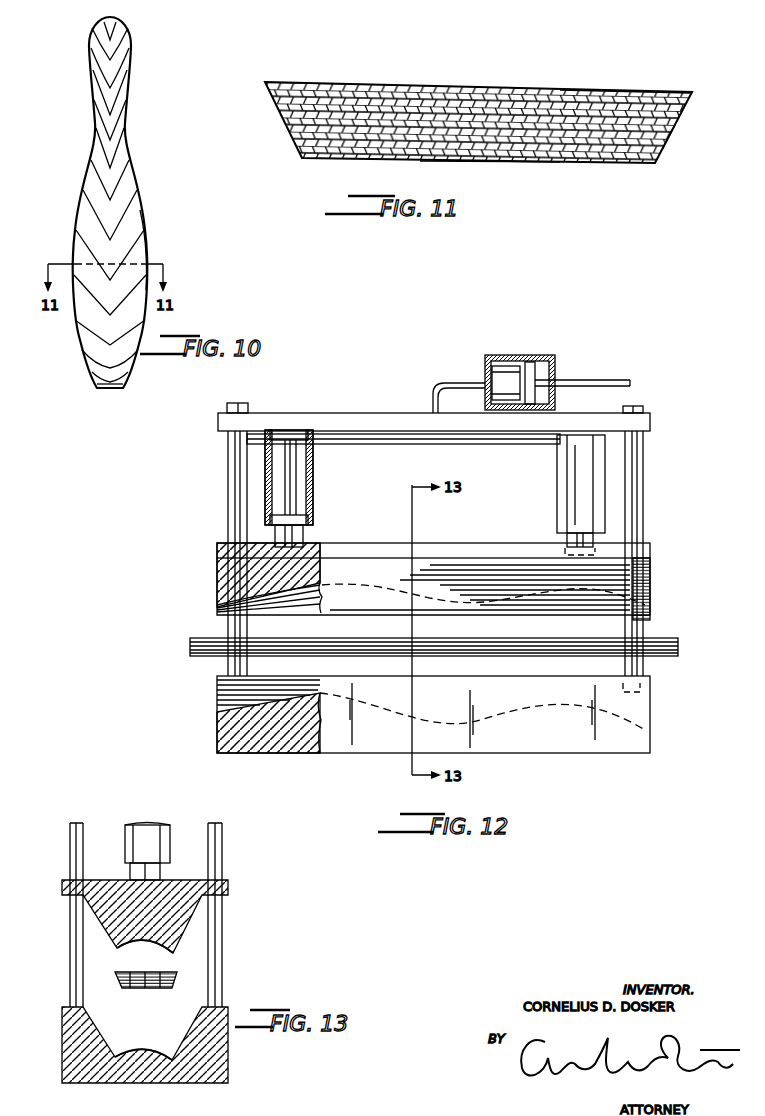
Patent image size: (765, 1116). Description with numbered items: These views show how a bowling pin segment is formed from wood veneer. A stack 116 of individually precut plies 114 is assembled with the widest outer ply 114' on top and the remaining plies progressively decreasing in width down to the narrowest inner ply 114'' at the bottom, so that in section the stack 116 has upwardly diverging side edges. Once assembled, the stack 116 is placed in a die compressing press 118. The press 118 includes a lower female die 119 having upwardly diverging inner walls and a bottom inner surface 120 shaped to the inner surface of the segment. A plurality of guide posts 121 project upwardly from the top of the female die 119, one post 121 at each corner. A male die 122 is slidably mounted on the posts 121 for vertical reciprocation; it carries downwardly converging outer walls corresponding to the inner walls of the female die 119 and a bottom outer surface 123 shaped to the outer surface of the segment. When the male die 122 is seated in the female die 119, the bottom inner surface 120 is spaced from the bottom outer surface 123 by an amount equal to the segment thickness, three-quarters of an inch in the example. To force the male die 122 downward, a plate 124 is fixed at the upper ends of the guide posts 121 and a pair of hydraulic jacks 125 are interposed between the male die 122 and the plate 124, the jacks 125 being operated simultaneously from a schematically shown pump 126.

In FIG. 10, the stack 116 is at (130, 114).
In FIG. 11, the stack 116 is at (441, 82).
In FIG. 12, the stack 116 is at (482, 647).
In FIG. 13, the stack 116 is at (131, 989).
In FIG. 10, the outer ply 114' is at (171, 250).
In FIG. 11, the outer ply 114' is at (613, 75).
In FIG. 11, the ply 114 is at (692, 140).
In FIG. 11, the inner ply 114'' is at (497, 177).
In FIG. 12, the die compressing press 118 is at (660, 550).
In FIG. 12, the lower female die 119 is at (610, 746).
In FIG. 13, the lower female die 119 is at (223, 1055).
In FIG. 12, the bottom inner surface 120 is at (217, 714).
In FIG. 13, the bottom inner surface 120 is at (140, 1052).
In FIG. 12, the guide posts 121 is at (644, 503).
In FIG. 13, the guide posts 121 is at (224, 968).
In FIG. 12, the male die 122 is at (650, 612).
In FIG. 13, the male die 122 is at (185, 910).
In FIG. 12, the bottom outer surface 123 is at (304, 607).
In FIG. 13, the bottom outer surface 123 is at (130, 949).
In FIG. 12, the plate 124 is at (218, 422).
In FIG. 12, the hydraulic jacks 125 is at (313, 496).
In FIG. 12, the pump 126 is at (555, 360).